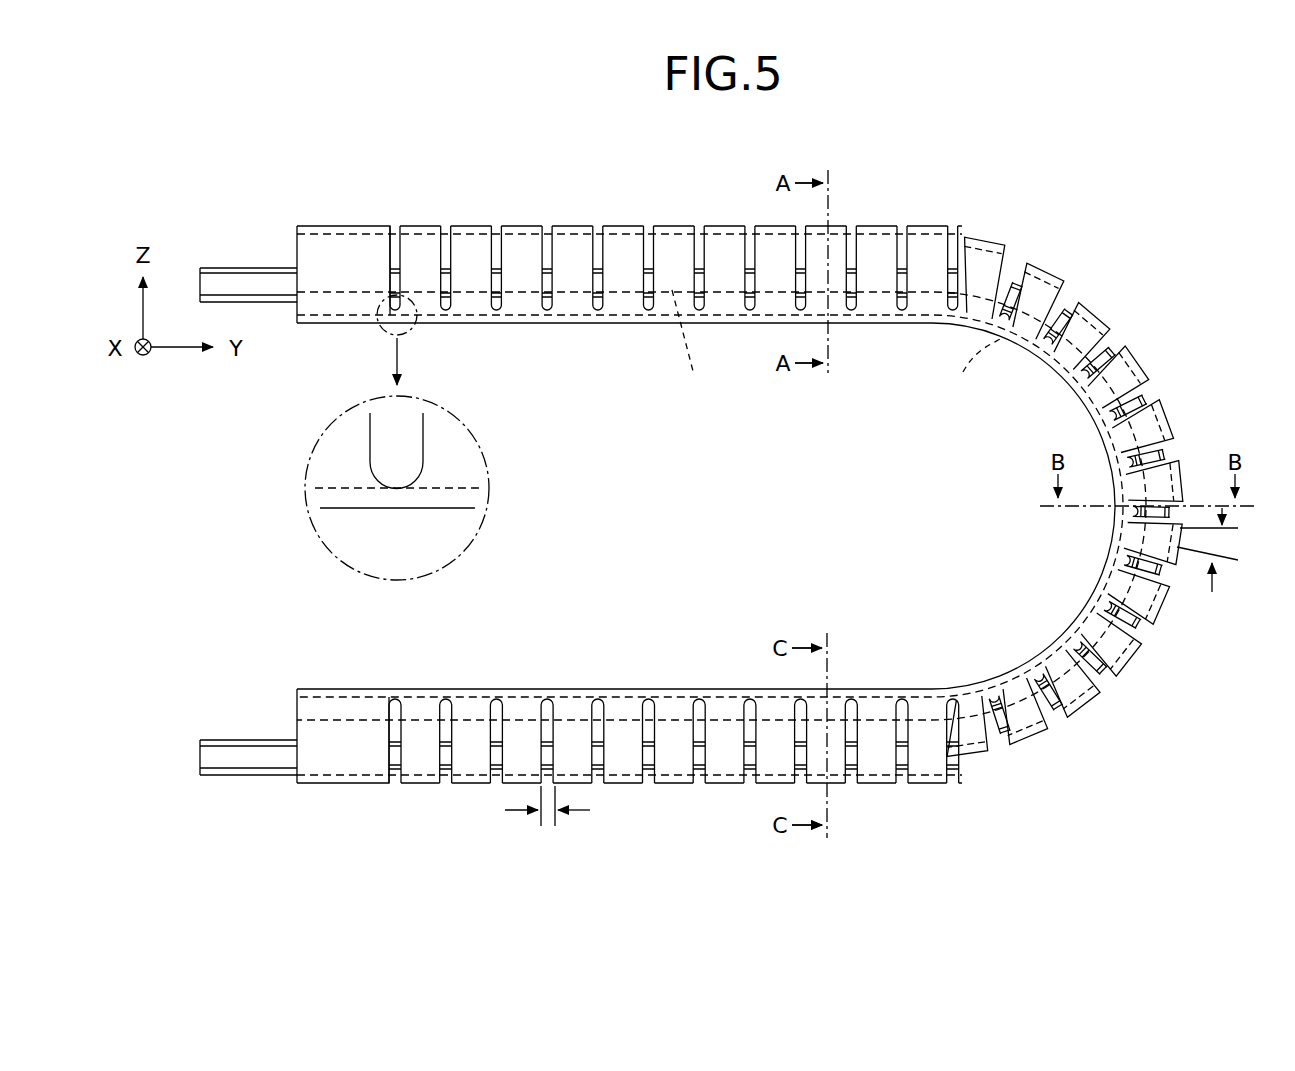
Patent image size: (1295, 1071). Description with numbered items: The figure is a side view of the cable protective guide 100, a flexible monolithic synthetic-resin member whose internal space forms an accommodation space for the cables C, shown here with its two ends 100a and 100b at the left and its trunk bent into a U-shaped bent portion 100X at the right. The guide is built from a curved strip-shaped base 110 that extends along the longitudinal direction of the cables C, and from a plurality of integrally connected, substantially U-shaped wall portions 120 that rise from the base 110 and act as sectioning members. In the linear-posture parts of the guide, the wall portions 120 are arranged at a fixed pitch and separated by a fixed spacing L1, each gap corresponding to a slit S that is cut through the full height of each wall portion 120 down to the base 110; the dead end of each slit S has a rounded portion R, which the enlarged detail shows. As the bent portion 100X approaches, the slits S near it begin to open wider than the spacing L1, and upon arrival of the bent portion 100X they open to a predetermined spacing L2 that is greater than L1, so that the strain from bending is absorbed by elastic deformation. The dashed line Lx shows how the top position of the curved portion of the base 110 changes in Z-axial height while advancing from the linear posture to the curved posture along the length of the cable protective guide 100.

The cable protective guide 100 is at (1214, 166).
The end of the cable protective guide 100a is at (343, 797).
The end of the cable protective guide 100b is at (342, 216).
The U-shaped bent portion 100X is at (1168, 644).
The curved strip-shaped base 110 is at (1058, 362).
The U-shaped wall portion 120 is at (1057, 290).
The cables C is at (237, 282).
The slit S is at (408, 424).
The rounded portion R is at (397, 460).
The dashed line Lx is at (837, 343).
The spacing L1 is at (562, 806).
The spacing L2 is at (1218, 564).